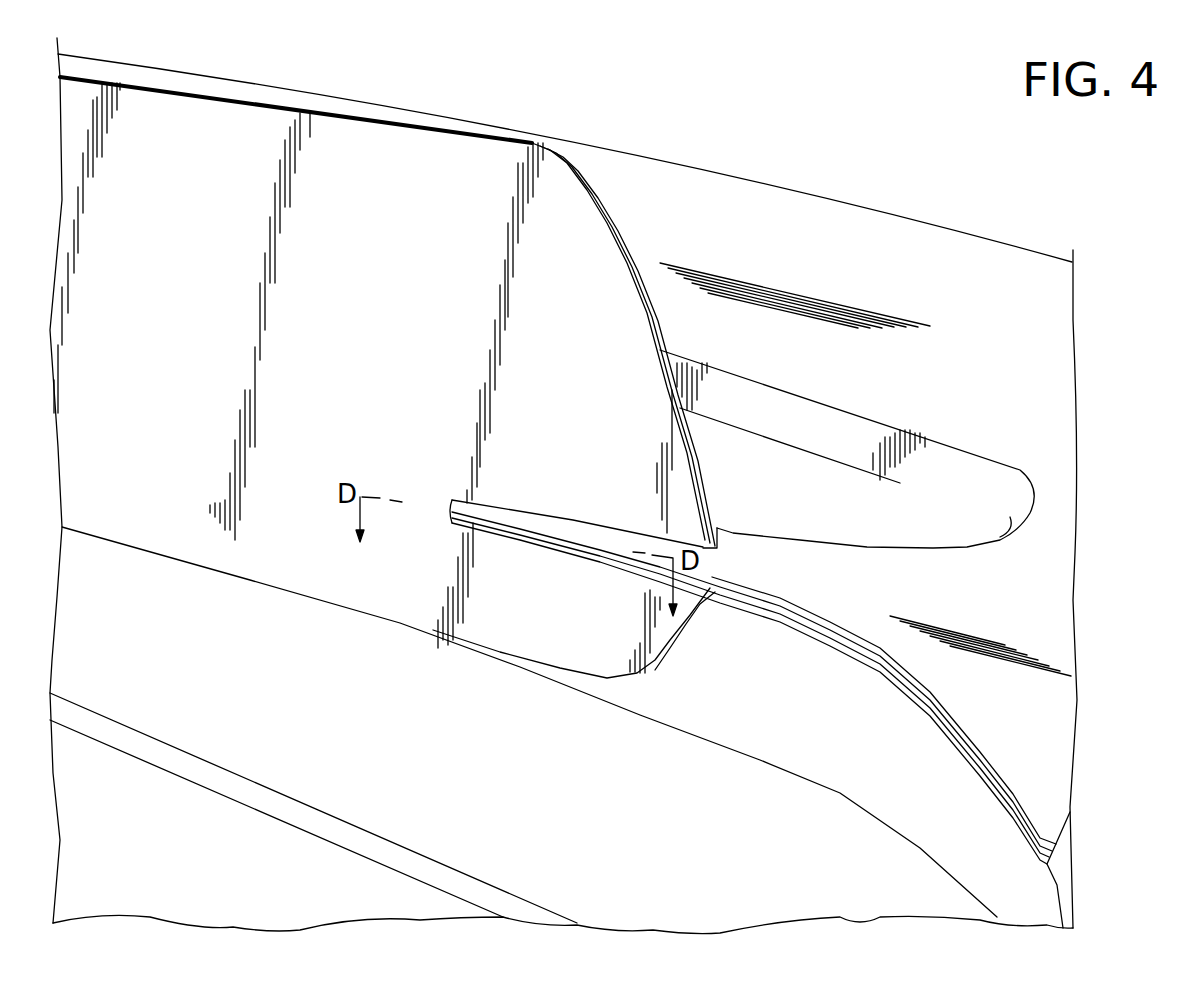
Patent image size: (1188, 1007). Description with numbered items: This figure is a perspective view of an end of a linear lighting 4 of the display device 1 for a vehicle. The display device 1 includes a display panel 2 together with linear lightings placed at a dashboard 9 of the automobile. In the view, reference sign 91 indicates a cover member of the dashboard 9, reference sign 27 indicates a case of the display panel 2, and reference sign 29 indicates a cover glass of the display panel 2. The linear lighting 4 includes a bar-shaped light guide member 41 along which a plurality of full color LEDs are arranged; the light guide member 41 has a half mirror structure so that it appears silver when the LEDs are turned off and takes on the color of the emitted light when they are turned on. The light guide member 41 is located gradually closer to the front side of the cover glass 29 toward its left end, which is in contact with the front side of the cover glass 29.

The display device 1 is at (955, 325).
The display panel 2 is at (428, 126).
The case 27 is at (650, 313).
The dashboard 9 is at (750, 264).
The cover member 91 is at (833, 577).
The cover glass 29 is at (330, 550).
The linear lighting 4 is at (765, 607).
The light guide member 41 is at (708, 598).